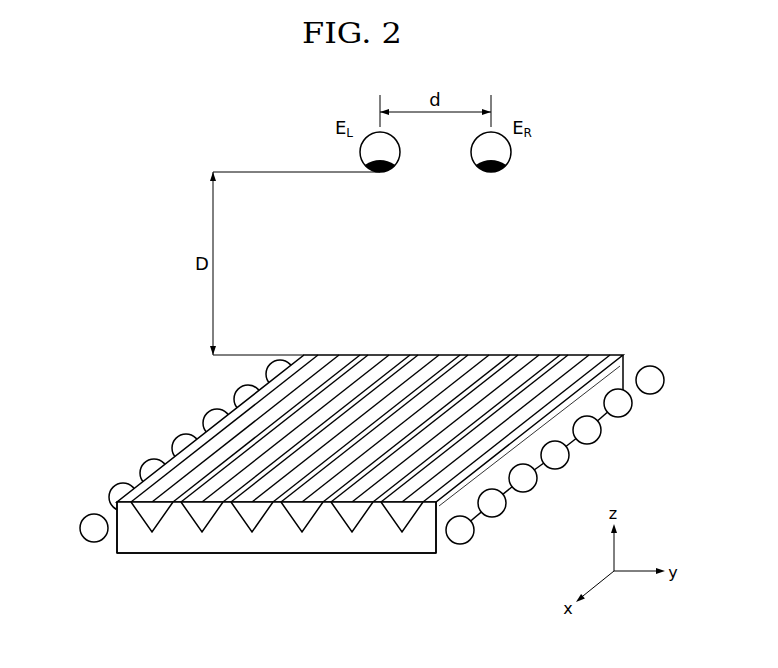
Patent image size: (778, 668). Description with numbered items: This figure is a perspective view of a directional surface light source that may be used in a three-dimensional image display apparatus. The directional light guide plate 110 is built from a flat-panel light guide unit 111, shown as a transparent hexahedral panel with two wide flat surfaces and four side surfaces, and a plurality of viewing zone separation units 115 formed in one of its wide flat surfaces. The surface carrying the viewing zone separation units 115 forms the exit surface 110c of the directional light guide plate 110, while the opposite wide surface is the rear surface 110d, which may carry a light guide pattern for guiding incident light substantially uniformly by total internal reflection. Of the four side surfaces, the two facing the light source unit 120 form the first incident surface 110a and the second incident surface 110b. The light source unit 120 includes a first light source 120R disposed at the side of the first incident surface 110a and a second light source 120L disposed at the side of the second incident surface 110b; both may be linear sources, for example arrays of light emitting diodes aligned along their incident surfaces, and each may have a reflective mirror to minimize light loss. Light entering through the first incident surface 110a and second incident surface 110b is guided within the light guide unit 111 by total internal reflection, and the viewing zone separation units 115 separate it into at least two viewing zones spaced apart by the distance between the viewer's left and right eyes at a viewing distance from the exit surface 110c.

The directional light guide plate 110 is at (347, 462).
The first incident surface 110a is at (115, 543).
The second incident surface 110b is at (440, 543).
The exit surface 110c is at (387, 358).
The rear surface 110d is at (382, 555).
The light guide unit 111 is at (276, 554).
The viewing zone separation units 115 is at (295, 520).
The light source unit 120 is at (358, 452).
The first light source 120R is at (273, 373).
The second light source 120L is at (481, 529).